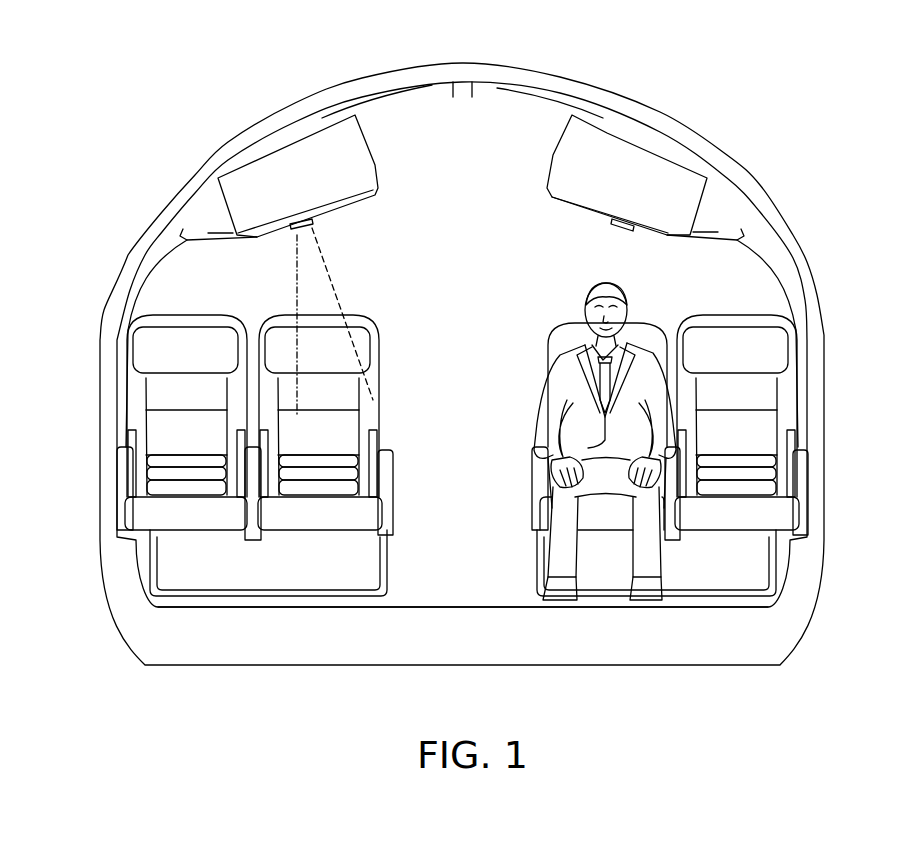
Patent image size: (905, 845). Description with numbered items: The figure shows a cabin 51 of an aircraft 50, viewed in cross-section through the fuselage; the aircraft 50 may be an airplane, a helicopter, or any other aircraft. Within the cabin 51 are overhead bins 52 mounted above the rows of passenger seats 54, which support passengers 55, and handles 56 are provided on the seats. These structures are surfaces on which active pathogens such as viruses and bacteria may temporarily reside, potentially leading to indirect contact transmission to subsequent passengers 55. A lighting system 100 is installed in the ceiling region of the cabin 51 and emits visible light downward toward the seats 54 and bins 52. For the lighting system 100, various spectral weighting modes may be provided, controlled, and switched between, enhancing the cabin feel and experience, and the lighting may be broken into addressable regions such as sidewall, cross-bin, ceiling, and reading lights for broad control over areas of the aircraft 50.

The aircraft 50 is at (123, 84).
The cabin 51 is at (483, 511).
The overhead bins 52 is at (252, 198).
The passenger seats 54 is at (347, 397).
The passengers 55 is at (684, 294).
The handles 56 is at (395, 460).
The lighting system 100 is at (447, 95).